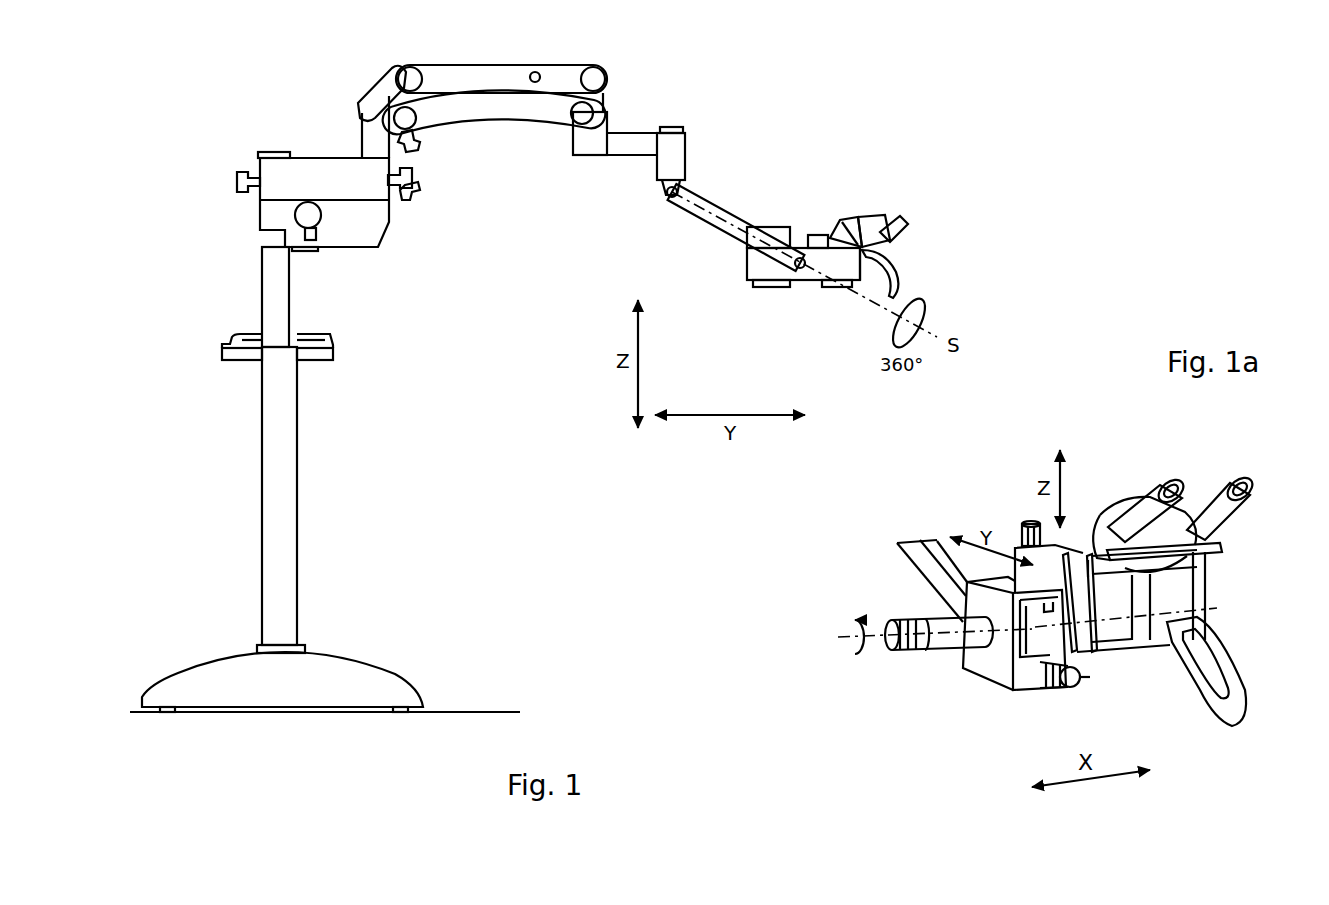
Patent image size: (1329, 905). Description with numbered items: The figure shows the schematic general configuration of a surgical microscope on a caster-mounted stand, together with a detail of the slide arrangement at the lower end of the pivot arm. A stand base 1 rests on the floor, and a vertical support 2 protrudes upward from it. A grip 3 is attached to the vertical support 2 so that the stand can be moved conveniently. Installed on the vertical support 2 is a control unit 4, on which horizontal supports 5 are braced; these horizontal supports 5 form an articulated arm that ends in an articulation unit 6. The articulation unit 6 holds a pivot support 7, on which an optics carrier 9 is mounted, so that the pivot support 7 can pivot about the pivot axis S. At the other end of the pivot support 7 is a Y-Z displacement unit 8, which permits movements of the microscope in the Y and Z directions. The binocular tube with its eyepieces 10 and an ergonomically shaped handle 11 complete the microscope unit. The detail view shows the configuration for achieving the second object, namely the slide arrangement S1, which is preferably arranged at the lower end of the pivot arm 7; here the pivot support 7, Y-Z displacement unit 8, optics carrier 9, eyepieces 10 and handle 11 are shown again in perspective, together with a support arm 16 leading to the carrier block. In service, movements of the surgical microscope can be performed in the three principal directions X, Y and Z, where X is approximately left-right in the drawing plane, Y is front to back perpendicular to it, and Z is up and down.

In FIG. 1, the stand base 1 is at (315, 665).
In FIG. 1, the vertical support 2 is at (278, 522).
In FIG. 1, the grip 3 is at (303, 333).
In FIG. 1, the control unit 4 is at (363, 227).
In FIG. 1, the horizontal supports 5 is at (605, 155).
In FIG. 1, the articulation unit 6 is at (685, 167).
In FIG. 1, the pivot support 7 is at (693, 237).
In FIG. 1A, the pivot support 7 is at (963, 677).
In FIG. 1, the Y-Z displacement unit 8 is at (765, 287).
In FIG. 1A, the Y-Z displacement unit 8 is at (1095, 658).
In FIG. 1, the optics carrier 9 is at (850, 268).
In FIG. 1A, the optics carrier 9 is at (1175, 588).
In FIG. 1, the eyepieces 10 is at (884, 238).
In FIG. 1A, the eyepieces 10 is at (1236, 482).
In FIG. 1, the handle 11 is at (897, 272).
In FIG. 1A, the handle 11 is at (1210, 640).
In FIG. 1A, the support arm 16 is at (910, 558).
In FIG. 1A, the slide arrangement S1 is at (1018, 693).